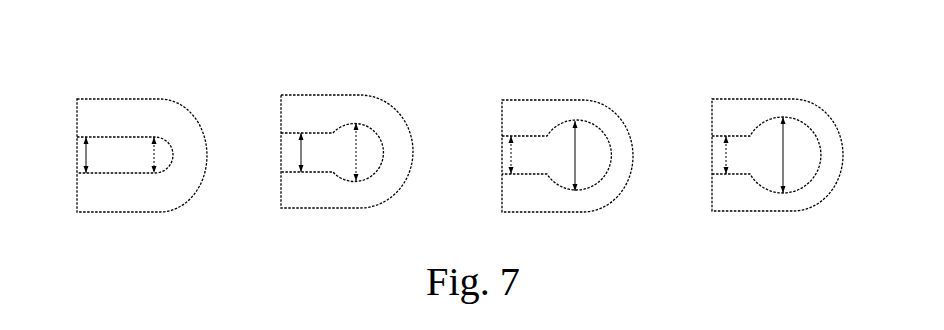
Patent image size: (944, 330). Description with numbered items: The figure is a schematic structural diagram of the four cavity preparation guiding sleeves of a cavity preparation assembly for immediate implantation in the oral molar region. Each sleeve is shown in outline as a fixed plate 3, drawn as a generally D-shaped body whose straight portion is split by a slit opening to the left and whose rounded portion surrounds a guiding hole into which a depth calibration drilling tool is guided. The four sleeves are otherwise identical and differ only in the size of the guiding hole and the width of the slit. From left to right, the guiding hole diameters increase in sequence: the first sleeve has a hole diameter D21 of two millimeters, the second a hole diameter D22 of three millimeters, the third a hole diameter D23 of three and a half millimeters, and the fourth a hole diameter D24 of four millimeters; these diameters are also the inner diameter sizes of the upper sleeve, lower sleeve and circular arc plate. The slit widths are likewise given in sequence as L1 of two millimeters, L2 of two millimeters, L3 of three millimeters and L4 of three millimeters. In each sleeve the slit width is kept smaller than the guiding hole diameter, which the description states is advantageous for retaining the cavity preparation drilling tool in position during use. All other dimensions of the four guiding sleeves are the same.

The fixed plate 3 is at (820, 60).
The slit width of the first guiding sleeve L1 is at (72, 155).
The guiding hole diameter of the first guiding sleeve D21 is at (135, 155).
The slit width of the second guiding sleeve L2 is at (285, 152).
The guiding hole diameter of the second guiding sleeve D22 is at (337, 152).
The slit width of the third guiding sleeve L3 is at (498, 155).
The guiding hole diameter of the third guiding sleeve D23 is at (555, 156).
The slit width of the fourth guiding sleeve L4 is at (713, 155).
The guiding hole diameter of the fourth guiding sleeve D24 is at (763, 155).